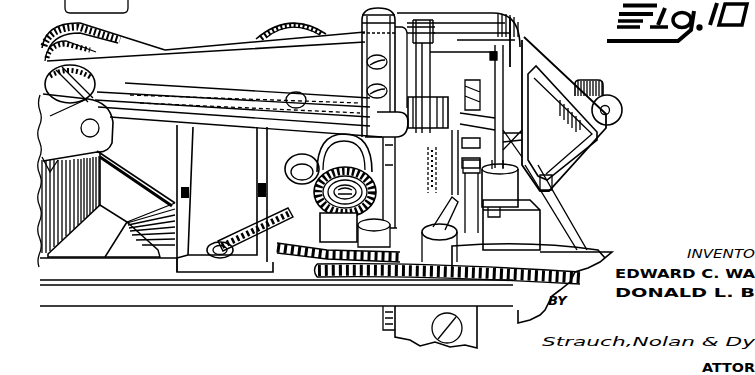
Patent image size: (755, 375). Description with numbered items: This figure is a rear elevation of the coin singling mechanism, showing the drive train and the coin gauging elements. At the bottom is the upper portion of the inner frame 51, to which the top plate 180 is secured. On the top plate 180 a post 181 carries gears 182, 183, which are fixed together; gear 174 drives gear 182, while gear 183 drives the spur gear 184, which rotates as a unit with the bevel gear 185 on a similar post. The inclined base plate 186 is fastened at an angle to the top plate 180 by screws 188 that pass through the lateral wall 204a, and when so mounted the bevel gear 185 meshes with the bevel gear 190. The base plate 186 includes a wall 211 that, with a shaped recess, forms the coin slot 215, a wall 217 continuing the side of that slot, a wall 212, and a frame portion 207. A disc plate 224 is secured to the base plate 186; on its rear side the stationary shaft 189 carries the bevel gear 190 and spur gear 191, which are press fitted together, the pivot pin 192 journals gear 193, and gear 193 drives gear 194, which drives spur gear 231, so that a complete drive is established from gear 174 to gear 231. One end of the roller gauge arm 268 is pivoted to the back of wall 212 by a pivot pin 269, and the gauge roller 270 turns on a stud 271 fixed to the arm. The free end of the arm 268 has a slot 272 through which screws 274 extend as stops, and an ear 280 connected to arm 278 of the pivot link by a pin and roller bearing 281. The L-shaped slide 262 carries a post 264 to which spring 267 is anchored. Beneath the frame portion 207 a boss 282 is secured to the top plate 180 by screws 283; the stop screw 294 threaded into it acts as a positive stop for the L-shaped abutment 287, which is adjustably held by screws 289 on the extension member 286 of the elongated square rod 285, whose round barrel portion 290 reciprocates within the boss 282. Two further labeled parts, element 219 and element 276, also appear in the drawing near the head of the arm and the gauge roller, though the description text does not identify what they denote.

The inner frame 51 is at (403, 340).
The gear 174 is at (593, 260).
The top plate 180 is at (171, 298).
The post 181 is at (393, 222).
The gear 182 is at (332, 279).
The gear 183 is at (316, 269).
The spur gear 184 is at (305, 246).
The bevel gear 185 is at (388, 198).
The base plate 186 is at (167, 163).
The screws 188 is at (220, 242).
The stationary shaft 189 is at (388, 185).
The bevel gear 190 is at (344, 153).
The spur gear 191 is at (383, 155).
The pivot pin 192 is at (332, 124).
The gear 193 is at (300, 165).
The gear 194 is at (313, 204).
The lateral wall 204a is at (198, 266).
The frame portion 207 is at (541, 62).
The wall 211 is at (77, 133).
The wall 212 is at (100, 29).
The coin slot 215 is at (104, 231).
The wall 217 is at (457, 53).
The head end 219 is at (489, 40).
The disc plate 224 is at (243, 160).
The spur gear 231 is at (242, 223).
The L-shaped slide 262 is at (626, 115).
The post 264 is at (605, 85).
The spring 267 is at (590, 80).
The roller gauge arm 268 is at (162, 56).
The pivot pin 269 is at (94, 90).
The gauge roller 270 is at (298, 28).
The stud 271 is at (287, 101).
The slot 272 is at (374, 134).
The screws 274 is at (368, 64).
The arch inner 276 is at (267, 38).
The arm 278 is at (438, 26).
The ear 280 is at (373, 110).
The pin and roller bearing 281 is at (432, 130).
The boss 282 is at (571, 222).
The screws 283 is at (460, 250).
The elongated square rod 285 is at (498, 256).
The extension member 286 is at (505, 153).
The L-shaped abutment 287 is at (541, 128).
The screws 289 is at (470, 96).
The round barrel portion 290 is at (538, 226).
The stop screw 294 is at (490, 196).